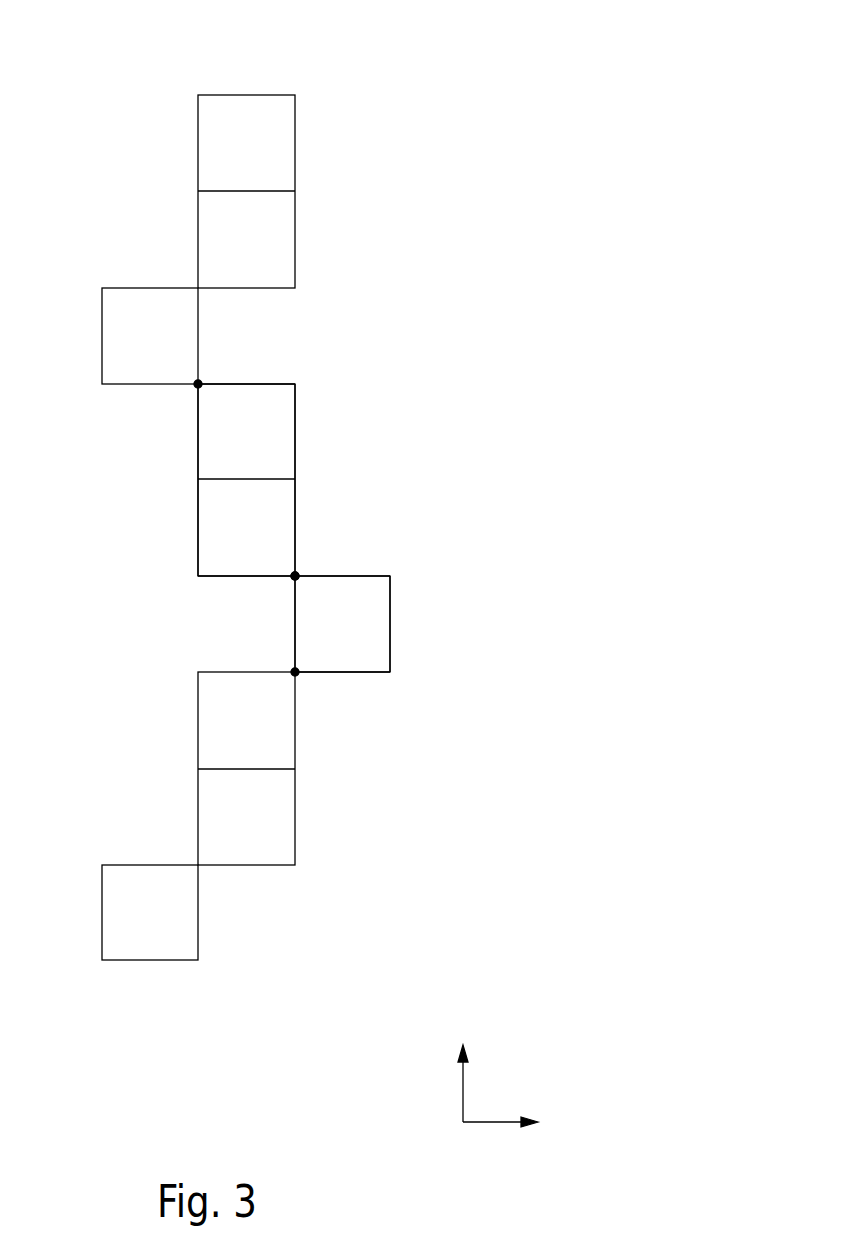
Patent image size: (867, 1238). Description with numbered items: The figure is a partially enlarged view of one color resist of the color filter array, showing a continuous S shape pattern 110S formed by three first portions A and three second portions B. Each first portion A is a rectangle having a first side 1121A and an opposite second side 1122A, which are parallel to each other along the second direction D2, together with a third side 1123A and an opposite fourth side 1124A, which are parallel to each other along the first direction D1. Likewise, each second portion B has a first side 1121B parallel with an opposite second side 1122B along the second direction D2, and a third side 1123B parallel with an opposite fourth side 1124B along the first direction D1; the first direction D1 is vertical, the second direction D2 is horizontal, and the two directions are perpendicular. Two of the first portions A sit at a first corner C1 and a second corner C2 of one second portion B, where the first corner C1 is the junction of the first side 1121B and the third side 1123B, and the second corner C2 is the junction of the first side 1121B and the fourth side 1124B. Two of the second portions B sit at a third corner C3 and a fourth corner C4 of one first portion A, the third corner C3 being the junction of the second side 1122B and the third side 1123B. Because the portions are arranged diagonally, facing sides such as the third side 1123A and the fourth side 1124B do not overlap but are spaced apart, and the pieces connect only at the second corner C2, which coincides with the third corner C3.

The S shape pattern 110S is at (527, 39).
The first portion A is at (283, 142).
The second portion B is at (113, 340).
The first side 1121A is at (180, 517).
The second side 1122A is at (313, 515).
The third side 1123A is at (253, 594).
The fourth side 1124A is at (272, 366).
The first side 1121B is at (312, 645).
The second side 1122B is at (410, 594).
The third side 1123B is at (352, 654).
The fourth side 1124B is at (352, 558).
The first corner C1 is at (297, 675).
The second corner C2 is at (295, 578).
The third corner C3 is at (295, 576).
The fourth corner C4 is at (198, 384).
The first direction D1 is at (462, 1067).
The second direction D2 is at (523, 1123).